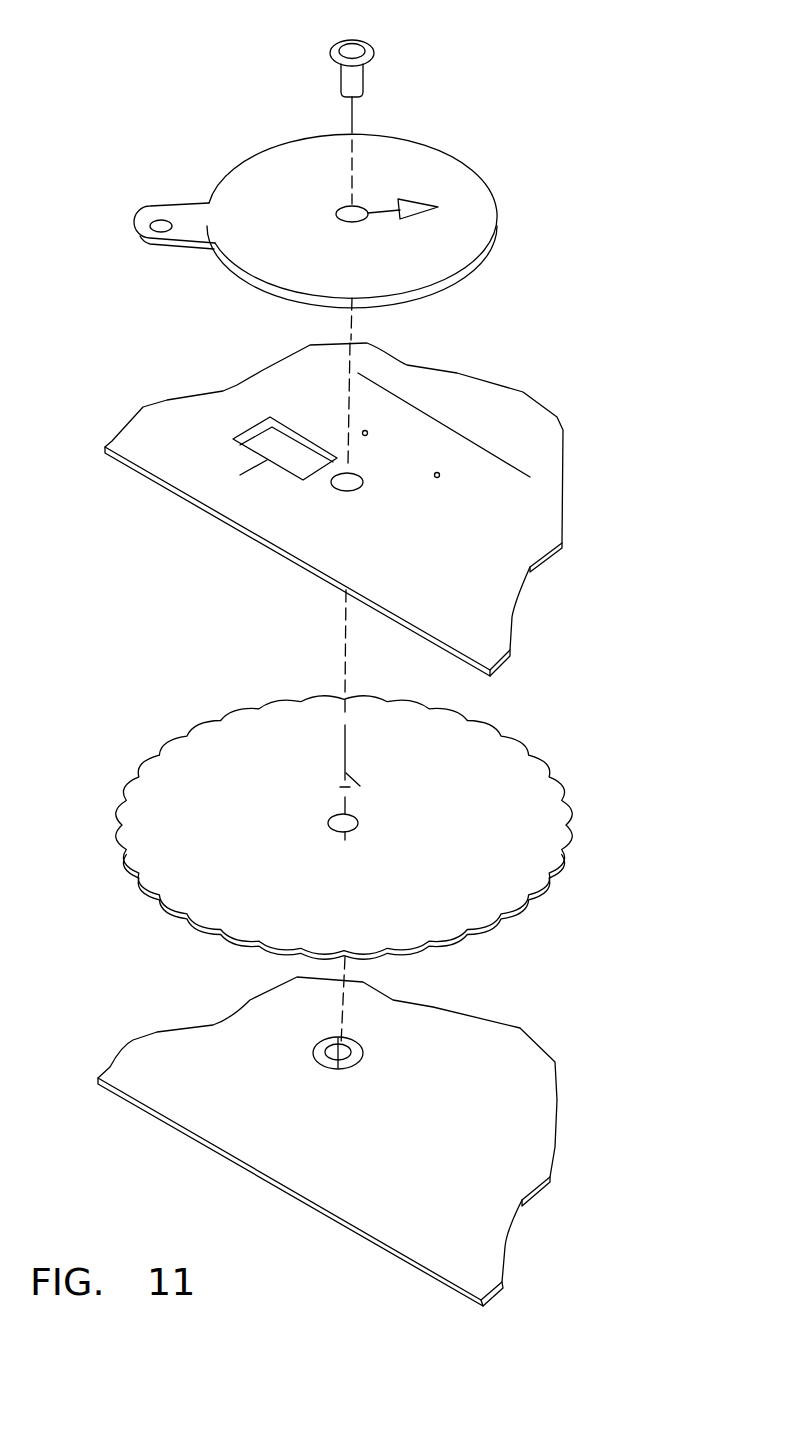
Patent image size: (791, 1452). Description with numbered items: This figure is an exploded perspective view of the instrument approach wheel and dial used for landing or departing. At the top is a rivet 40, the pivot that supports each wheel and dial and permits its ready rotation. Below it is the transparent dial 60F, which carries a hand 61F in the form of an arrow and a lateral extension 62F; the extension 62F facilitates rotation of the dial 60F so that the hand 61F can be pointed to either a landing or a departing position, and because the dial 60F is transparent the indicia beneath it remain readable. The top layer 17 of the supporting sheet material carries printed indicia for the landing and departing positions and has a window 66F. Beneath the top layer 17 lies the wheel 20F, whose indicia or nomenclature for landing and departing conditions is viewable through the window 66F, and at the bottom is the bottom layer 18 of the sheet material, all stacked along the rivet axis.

The rivet 40 is at (371, 52).
The transparent dial 60F is at (315, 212).
The hand 61F is at (378, 200).
The extension 62F is at (157, 215).
The window 66F is at (265, 443).
The top layer 17 is at (375, 509).
The bottom layer 18 is at (505, 1078).
The wheel 20F is at (508, 778).